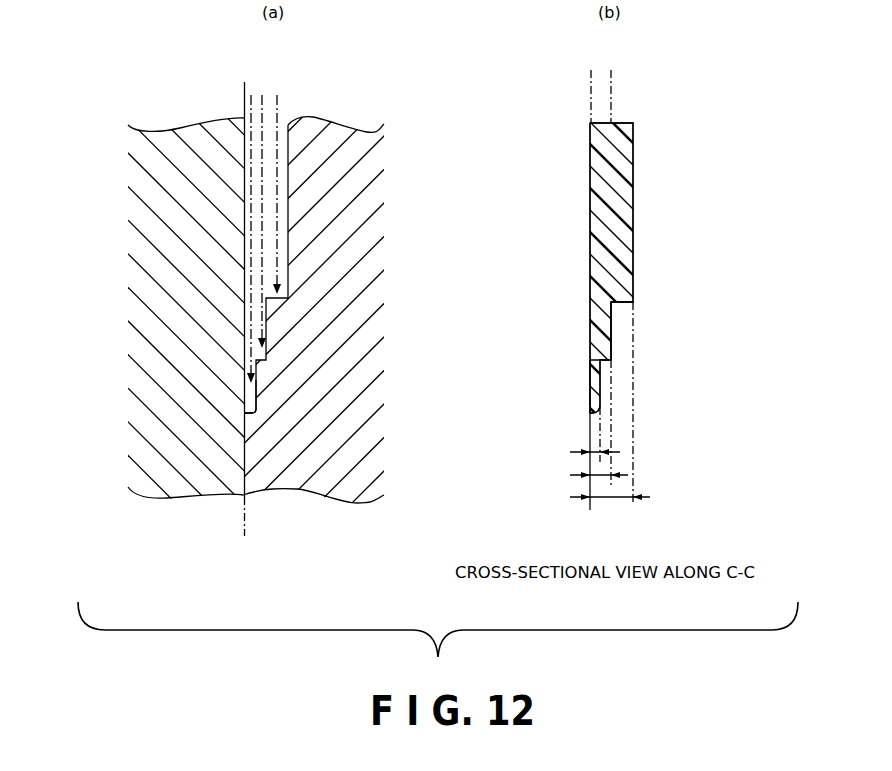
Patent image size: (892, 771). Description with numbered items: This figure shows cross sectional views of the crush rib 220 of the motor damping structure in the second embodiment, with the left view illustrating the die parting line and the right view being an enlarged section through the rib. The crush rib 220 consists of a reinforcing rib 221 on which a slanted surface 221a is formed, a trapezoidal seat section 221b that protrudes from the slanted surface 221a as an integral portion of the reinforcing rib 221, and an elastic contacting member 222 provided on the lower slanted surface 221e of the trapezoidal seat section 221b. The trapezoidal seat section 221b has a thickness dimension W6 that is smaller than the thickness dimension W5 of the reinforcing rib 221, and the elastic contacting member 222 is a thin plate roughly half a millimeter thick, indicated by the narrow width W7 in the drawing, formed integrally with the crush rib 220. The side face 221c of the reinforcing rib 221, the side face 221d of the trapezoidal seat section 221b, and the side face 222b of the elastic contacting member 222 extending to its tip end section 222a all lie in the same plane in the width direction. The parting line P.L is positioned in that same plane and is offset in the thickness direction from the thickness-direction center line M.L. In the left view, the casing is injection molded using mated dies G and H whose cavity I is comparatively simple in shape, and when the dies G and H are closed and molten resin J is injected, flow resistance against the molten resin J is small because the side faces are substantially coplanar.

The crush rib 220 is at (745, 232).
The reinforcing rib 221 is at (642, 227).
The slanted surface 221a is at (618, 303).
The trapezoidal seat section 221b is at (611, 332).
The side face of reinforcing rib 221c is at (590, 233).
The side face of trapezoidal seat section 221d is at (590, 320).
The lower slanted surface 221e is at (604, 365).
The elastic contacting member 222 is at (609, 380).
The tip end section 222a is at (590, 420).
The side face of elastic contacting member 222b is at (590, 383).
The thickness dimension of reinforcing rib W5 is at (590, 495).
The thickness dimension of trapezoidal seat section W6 is at (590, 474).
The tip width W7 is at (590, 447).
The mating die G is at (218, 104).
The mating die H is at (306, 103).
The cavity I is at (245, 403).
The molten resin J is at (262, 84).
The parting line P.L is at (243, 523).
The center line M.L is at (614, 110).